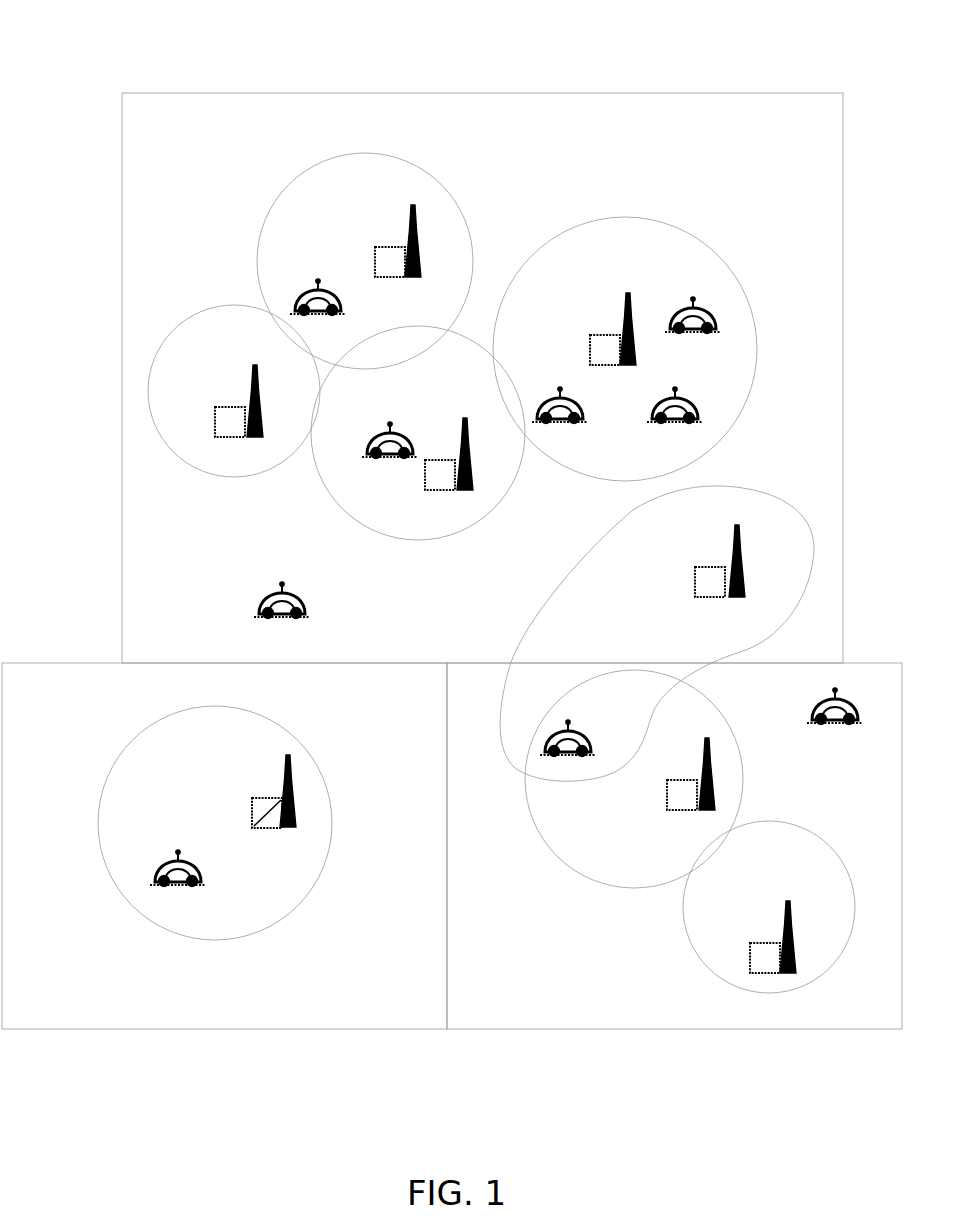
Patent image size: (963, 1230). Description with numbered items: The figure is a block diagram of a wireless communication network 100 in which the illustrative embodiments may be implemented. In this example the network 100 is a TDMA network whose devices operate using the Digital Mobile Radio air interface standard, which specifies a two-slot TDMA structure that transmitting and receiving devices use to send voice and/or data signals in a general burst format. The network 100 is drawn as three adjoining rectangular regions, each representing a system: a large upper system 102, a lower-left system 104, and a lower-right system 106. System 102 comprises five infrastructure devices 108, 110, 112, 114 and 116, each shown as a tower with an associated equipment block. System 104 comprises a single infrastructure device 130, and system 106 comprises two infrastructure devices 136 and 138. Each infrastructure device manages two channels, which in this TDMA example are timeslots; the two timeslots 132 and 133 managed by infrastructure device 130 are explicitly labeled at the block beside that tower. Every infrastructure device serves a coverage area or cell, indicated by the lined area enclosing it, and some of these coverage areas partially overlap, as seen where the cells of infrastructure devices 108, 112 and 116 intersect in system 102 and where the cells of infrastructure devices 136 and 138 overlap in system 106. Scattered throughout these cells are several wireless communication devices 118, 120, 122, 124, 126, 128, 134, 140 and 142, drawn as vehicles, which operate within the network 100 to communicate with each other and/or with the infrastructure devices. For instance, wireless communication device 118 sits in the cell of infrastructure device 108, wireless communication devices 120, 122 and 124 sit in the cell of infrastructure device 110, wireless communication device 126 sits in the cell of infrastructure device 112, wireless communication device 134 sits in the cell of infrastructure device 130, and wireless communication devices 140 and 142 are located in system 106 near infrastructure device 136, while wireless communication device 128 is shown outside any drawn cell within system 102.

The wireless communication network 100 is at (76, 42).
The system 102 is at (820, 131).
The system 104 is at (418, 1021).
The system 106 is at (880, 1021).
The infrastructure device 108 is at (418, 225).
The infrastructure device 110 is at (630, 298).
The infrastructure device 112 is at (463, 422).
The infrastructure device 114 is at (732, 552).
The infrastructure device 116 is at (253, 378).
The wireless communication device 118 is at (307, 283).
The wireless communication device 120 is at (717, 310).
The wireless communication device 122 is at (685, 400).
The wireless communication device 124 is at (562, 395).
The wireless communication device 126 is at (387, 430).
The wireless communication device 128 is at (270, 597).
The infrastructure device 130 is at (288, 762).
The timeslot 132 is at (272, 817).
The timeslot 133 is at (253, 800).
The wireless communication device 134 is at (173, 862).
The infrastructure device 136 is at (710, 770).
The infrastructure device 138 is at (795, 923).
The wireless communication device 140 is at (570, 727).
The wireless communication device 142 is at (820, 708).